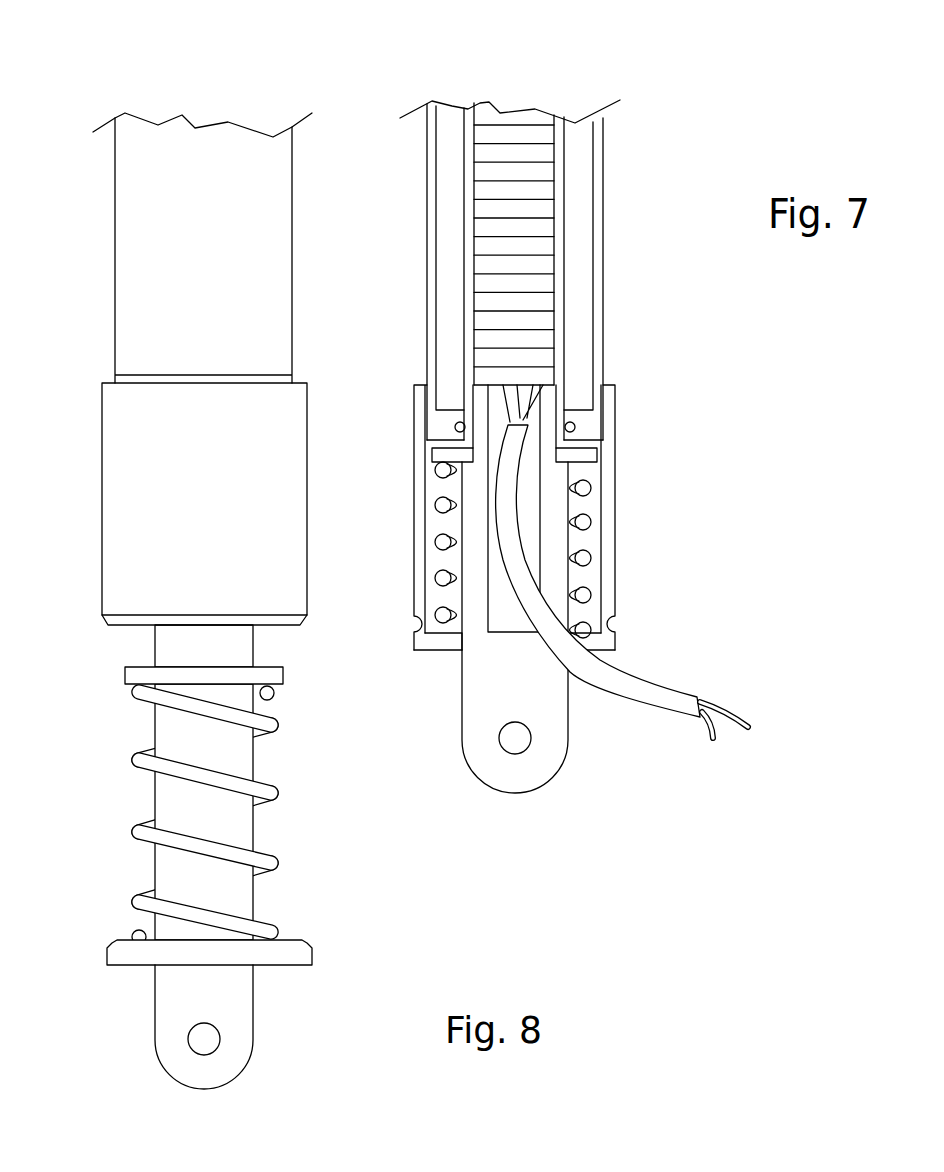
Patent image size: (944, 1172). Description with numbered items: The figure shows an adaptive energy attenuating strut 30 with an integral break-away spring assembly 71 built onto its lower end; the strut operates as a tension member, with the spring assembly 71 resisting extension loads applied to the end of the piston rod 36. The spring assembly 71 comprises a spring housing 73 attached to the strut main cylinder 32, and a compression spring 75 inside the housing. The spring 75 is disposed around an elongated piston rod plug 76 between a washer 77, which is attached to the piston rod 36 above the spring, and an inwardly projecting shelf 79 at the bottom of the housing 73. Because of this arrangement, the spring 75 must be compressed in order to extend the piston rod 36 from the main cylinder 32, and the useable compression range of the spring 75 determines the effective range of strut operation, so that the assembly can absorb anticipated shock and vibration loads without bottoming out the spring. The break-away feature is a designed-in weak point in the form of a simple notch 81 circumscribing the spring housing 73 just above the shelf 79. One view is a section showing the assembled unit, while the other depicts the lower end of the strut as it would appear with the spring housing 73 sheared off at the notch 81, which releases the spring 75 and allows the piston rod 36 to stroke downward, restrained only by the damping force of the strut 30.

In FIG. 8, the energy attenuating strut 30 is at (114, 102).
In FIG. 7, the energy attenuating strut 30 is at (680, 97).
In FIG. 8, the strut main cylinder 32 is at (293, 217).
In FIG. 7, the strut main cylinder 32 is at (605, 293).
In FIG. 8, the piston rod 36 is at (258, 643).
In FIG. 7, the piston rod 36 is at (566, 210).
In FIG. 7, the spring assembly 71 is at (542, 569).
In FIG. 8, the spring housing 73 is at (307, 485).
In FIG. 7, the spring housing 73 is at (414, 485).
In FIG. 8, the compression spring 75 is at (218, 784).
In FIG. 7, the compression spring 75 is at (603, 518).
In FIG. 8, the piston rod plug 76 is at (255, 833).
In FIG. 7, the piston rod plug 76 is at (460, 562).
In FIG. 8, the washer 77 is at (283, 682).
In FIG. 7, the washer 77 is at (430, 452).
In FIG. 8, the shelf 79 is at (130, 965).
In FIG. 7, the shelf 79 is at (587, 645).
In FIG. 8, the notch 81 is at (125, 627).
In FIG. 7, the notch 81 is at (616, 622).